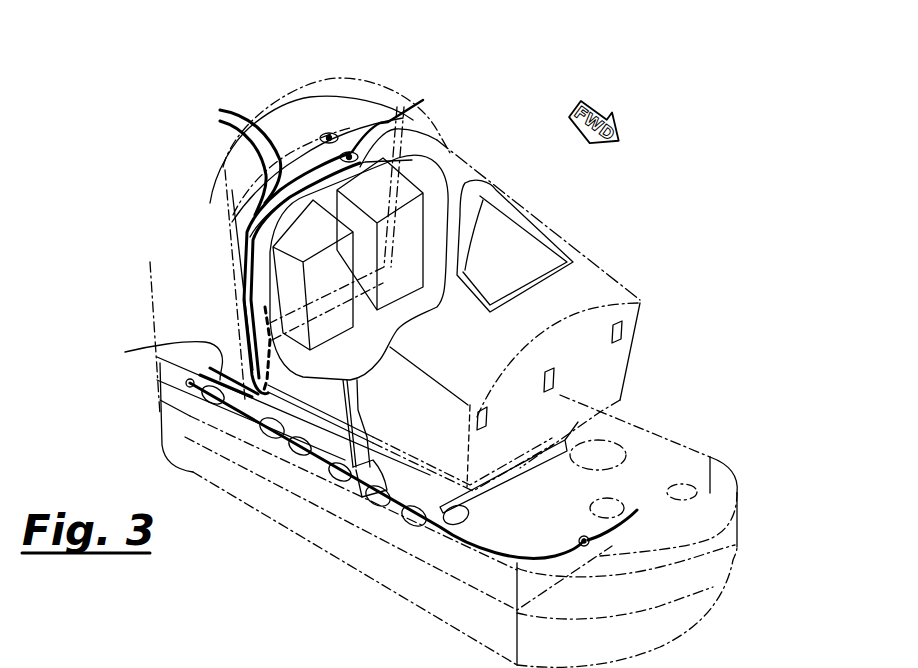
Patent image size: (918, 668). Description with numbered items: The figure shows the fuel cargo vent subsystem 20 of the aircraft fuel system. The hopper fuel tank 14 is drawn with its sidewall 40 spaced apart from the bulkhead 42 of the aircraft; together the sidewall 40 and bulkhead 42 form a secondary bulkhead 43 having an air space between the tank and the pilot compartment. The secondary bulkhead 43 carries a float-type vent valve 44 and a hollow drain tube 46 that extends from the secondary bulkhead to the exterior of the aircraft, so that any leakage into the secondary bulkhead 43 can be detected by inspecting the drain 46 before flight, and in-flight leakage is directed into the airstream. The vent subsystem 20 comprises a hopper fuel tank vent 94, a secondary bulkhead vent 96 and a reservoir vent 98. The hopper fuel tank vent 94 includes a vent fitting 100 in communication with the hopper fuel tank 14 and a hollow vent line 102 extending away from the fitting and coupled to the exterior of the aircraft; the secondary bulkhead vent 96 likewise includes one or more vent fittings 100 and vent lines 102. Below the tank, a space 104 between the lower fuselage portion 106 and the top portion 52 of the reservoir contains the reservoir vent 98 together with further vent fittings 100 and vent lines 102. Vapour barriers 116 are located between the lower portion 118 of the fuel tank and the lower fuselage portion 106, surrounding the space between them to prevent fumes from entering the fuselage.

The hopper fuel tank 14 is at (588, 272).
The fuel cargo vent subsystem 20 is at (179, 241).
The sidewall 40 is at (405, 148).
The bulkhead 42 is at (370, 120).
The secondary bulkhead 43 is at (237, 277).
The float-type vent valve 44 is at (263, 307).
The hollow drain tube 46 is at (180, 369).
The top portion of reservoir 52 is at (642, 464).
The hopper fuel tank vent 94 is at (398, 116).
The secondary bulkhead vent 96 is at (327, 133).
The reservoir vent 98 is at (622, 516).
The vent fitting 100 is at (351, 152).
The vent line 102 is at (543, 557).
The space 104 is at (688, 459).
The lower fuselage portion 106 is at (420, 606).
The vapour barrier 116 is at (466, 508).
The lower portion of fuel tank 118 is at (529, 467).